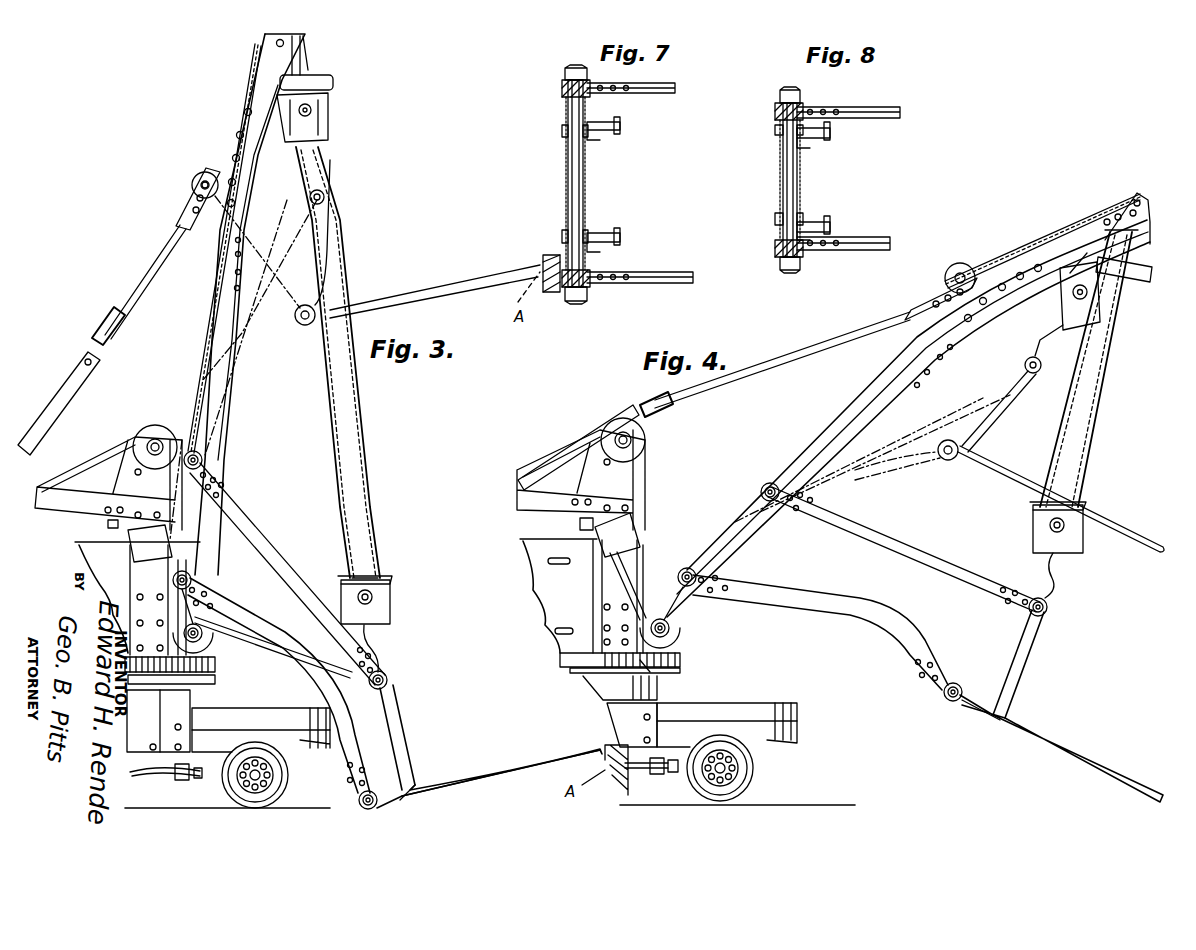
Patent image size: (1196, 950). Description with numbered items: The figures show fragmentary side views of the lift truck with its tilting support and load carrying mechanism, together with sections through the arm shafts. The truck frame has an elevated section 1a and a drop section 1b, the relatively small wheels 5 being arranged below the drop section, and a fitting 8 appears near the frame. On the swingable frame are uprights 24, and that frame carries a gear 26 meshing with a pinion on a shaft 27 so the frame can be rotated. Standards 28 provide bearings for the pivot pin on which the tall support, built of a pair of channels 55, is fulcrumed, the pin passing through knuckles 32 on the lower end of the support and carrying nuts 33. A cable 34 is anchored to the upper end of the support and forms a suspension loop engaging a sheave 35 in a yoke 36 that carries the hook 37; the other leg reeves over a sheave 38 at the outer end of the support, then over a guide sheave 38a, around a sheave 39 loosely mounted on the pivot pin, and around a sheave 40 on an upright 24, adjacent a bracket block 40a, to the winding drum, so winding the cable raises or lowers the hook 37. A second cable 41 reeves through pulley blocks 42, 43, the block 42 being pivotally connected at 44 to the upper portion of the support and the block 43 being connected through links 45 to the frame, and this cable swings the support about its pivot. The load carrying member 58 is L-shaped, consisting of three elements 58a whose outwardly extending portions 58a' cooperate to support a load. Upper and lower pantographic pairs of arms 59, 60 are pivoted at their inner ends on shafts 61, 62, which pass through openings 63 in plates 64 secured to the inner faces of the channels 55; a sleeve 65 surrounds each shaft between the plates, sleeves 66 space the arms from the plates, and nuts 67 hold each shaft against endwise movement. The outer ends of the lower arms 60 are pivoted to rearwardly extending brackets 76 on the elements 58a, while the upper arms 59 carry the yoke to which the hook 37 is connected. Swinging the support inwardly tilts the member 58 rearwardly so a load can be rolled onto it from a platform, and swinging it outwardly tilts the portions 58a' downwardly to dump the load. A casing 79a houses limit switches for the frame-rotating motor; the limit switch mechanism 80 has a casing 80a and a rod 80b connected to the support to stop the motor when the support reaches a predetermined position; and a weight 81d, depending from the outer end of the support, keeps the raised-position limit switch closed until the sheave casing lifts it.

In FIG. 3, the elevated section 1a is at (143, 740).
In FIG. 4, the elevated section 1a is at (660, 690).
In FIG. 3, the drop section 1b is at (262, 716).
In FIG. 4, the drop section 1b is at (760, 712).
In FIG. 3, the small wheels 5 is at (232, 808).
In FIG. 4, the small wheels 5 is at (755, 770).
In FIG. 3, the draw bar hitch 8 is at (164, 777).
In FIG. 4, the draw bar hitch 8 is at (640, 768).
In FIG. 3, the uprights 24 is at (135, 582).
In FIG. 4, the uprights 24 is at (607, 582).
In FIG. 3, the gear 26 is at (216, 679).
In FIG. 4, the gear 26 is at (693, 670).
In FIG. 4, the shaft 27 is at (578, 668).
In FIG. 3, the standards 28 is at (216, 662).
In FIG. 4, the standards 28 is at (680, 642).
In FIG. 3, the knuckles 32 is at (204, 640).
In FIG. 4, the knuckles 32 is at (671, 628).
In FIG. 3, the nuts 33 is at (212, 614).
In FIG. 4, the nuts 33 is at (643, 627).
In FIG. 3, the cable 34 is at (338, 472).
In FIG. 3, the sheave 35 is at (362, 577).
In FIG. 4, the sheave 35 is at (1060, 502).
In FIG. 3, the yoke 36 is at (392, 598).
In FIG. 3, the hook 37 is at (386, 645).
In FIG. 4, the hook 37 is at (1050, 594).
In FIG. 4, the sheave 38 is at (1120, 200).
In FIG. 3, the guide sheave 38a is at (192, 188).
In FIG. 4, the guide sheave 38a is at (958, 270).
In FIG. 3, the sheave 39 is at (220, 612).
In FIG. 4, the sheave 39 is at (640, 660).
In FIG. 3, the sheave 40 is at (157, 428).
In FIG. 4, the sheave 40 is at (646, 440).
In FIG. 3, the pulley bracket block 40a is at (128, 548).
In FIG. 3, the cable 41 is at (140, 295).
In FIG. 4, the cable 41 is at (755, 372).
In FIG. 3, the pulley block 42 is at (177, 217).
In FIG. 4, the pulley block 42 is at (922, 300).
In FIG. 3, the pulley block 43 is at (118, 338).
In FIG. 4, the pulley block 43 is at (655, 393).
In FIG. 3, the pivotal connection 44 is at (222, 188).
In FIG. 4, the pivotal connection 44 is at (966, 300).
In FIG. 3, the links 45 is at (70, 395).
In FIG. 4, the links 45 is at (608, 418).
In FIG. 7, the channels 55 is at (620, 125).
In FIG. 8, the channels 55 is at (830, 133).
In FIG. 3, the load carrying member 58 is at (419, 768).
In FIG. 4, the load carrying member 58 is at (1005, 696).
In FIG. 3, the elements 58a is at (416, 737).
In FIG. 4, the elements 58a is at (1035, 664).
In FIG. 3, the outwardly extending portions 58a' is at (489, 773).
In FIG. 4, the outwardly extending portions 58a' is at (1061, 748).
In FIG. 3, the upper arms 59 is at (280, 545).
In FIG. 4, the upper arms 59 is at (962, 570).
In FIG. 8, the upper arms 59 is at (878, 107).
In FIG. 3, the lower arms 60 is at (262, 618).
In FIG. 4, the lower arms 60 is at (928, 640).
In FIG. 7, the lower arms 60 is at (660, 85).
In FIG. 4, the shaft 61 is at (690, 568).
In FIG. 8, the shaft 61 is at (798, 185).
In FIG. 7, the shaft 62 is at (584, 198).
In FIG. 7, the openings 63 is at (562, 134).
In FIG. 8, the openings 63 is at (776, 215).
In FIG. 7, the plates 64 is at (610, 132).
In FIG. 8, the plates 64 is at (830, 142).
In FIG. 7, the sleeve 65 is at (566, 195).
In FIG. 8, the sleeve 65 is at (780, 170).
In FIG. 7, the sleeves 66 is at (562, 112).
In FIG. 8, the sleeves 66 is at (775, 122).
In FIG. 7, the nuts 67 is at (562, 72).
In FIG. 8, the nuts 67 is at (800, 97).
In FIG. 3, the brackets 76 is at (378, 806).
In FIG. 4, the brackets 76 is at (965, 690).
In FIG. 3, the casing 79a is at (110, 517).
In FIG. 4, the casing 79a is at (580, 518).
In FIG. 4, the limit switch mechanism 80 is at (613, 615).
In FIG. 4, the casing 80a is at (630, 535).
In FIG. 4, the rod 80b is at (628, 570).
In FIG. 3, the weight 81d is at (335, 82).
In FIG. 4, the weight 81d is at (1146, 266).